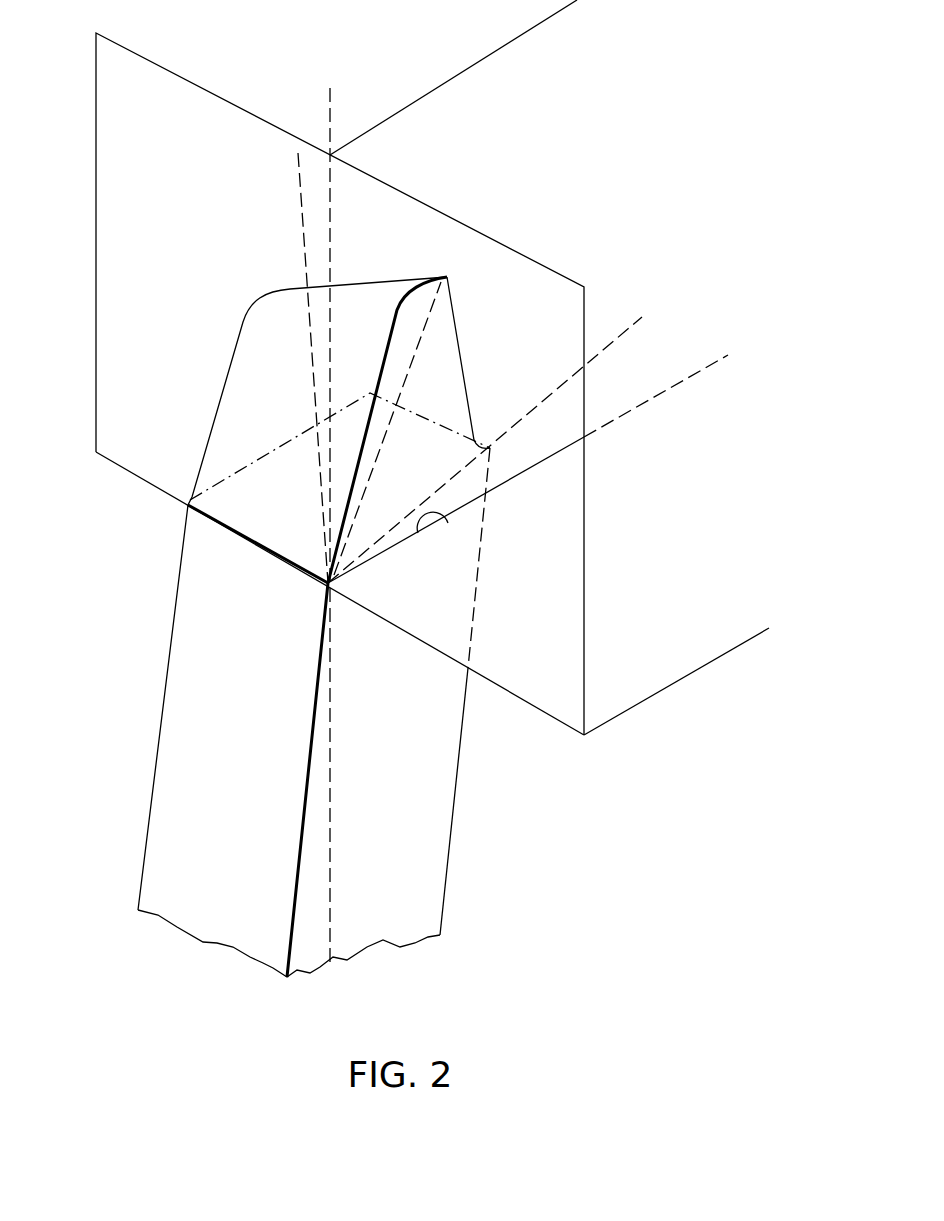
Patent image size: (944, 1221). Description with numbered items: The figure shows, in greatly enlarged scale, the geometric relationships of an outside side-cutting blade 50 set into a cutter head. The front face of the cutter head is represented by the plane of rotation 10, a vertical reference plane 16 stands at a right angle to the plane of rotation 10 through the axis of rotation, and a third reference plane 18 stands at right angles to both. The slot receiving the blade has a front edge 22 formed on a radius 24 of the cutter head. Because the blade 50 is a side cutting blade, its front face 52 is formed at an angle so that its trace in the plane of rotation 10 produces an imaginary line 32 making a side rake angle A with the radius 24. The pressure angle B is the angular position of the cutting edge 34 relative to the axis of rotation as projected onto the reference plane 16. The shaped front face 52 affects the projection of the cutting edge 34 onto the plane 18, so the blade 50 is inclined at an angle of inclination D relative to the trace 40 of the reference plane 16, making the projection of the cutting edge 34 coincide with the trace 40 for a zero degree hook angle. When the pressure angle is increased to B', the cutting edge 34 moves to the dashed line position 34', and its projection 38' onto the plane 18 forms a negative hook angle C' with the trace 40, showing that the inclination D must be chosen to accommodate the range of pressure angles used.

The plane of rotation 10 is at (642, 677).
The reference plane 16 is at (519, 97).
The third reference plane 18 is at (165, 184).
The front edge of the slot 22 is at (439, 535).
The radius 24 is at (652, 399).
The imaginary line 32 is at (615, 342).
The cutting edge 34 is at (367, 627).
The dashed line position of cutting edge 34' is at (387, 428).
The projection of the cutting edge onto plane 18 38' is at (293, 368).
The trace 40 is at (332, 246).
The cutting blade 50 is at (152, 755).
The front face 52 is at (402, 715).
The side rake angle A is at (625, 385).
The pressure angle B is at (344, 441).
The increased pressure angle B' is at (368, 364).
The negative hook angle C' is at (316, 181).
The angle of inclination D is at (367, 873).